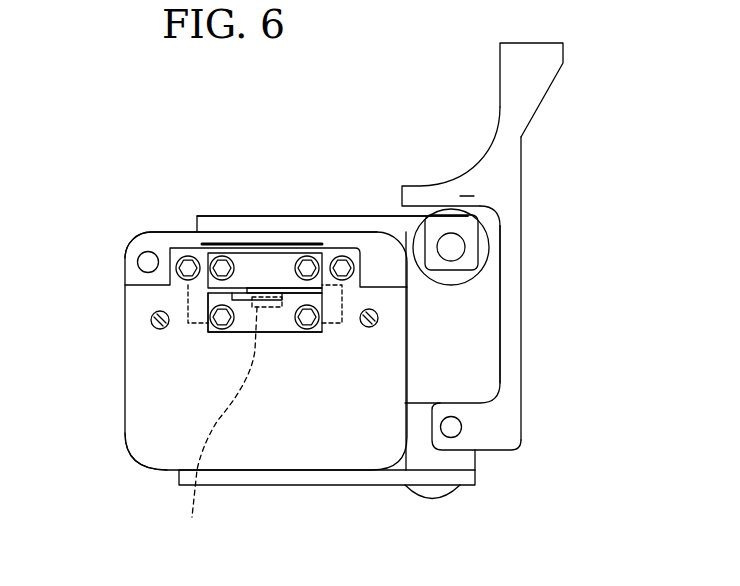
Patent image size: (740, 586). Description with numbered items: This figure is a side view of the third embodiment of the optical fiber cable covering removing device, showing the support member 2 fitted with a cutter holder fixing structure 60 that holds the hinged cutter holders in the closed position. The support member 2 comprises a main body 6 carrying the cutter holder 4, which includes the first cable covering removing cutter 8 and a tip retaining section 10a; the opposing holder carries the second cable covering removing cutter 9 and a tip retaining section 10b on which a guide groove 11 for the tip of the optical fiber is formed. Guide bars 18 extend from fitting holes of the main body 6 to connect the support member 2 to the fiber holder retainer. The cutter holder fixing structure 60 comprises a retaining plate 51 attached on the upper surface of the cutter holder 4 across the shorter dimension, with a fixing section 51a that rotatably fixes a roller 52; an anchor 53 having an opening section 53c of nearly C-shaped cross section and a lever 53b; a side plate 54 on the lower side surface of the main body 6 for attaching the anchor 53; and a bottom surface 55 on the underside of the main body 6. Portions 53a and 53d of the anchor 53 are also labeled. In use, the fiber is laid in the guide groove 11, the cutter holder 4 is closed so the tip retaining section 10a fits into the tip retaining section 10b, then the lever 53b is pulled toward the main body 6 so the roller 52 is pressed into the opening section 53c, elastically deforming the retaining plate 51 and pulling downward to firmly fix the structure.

The support member 2 is at (125, 419).
The cutter holder 4 is at (150, 232).
The main body 6 is at (146, 446).
The first cable covering removing cutter 8 is at (243, 287).
The second cable covering removing cutter 9 is at (283, 300).
The tip retaining section 10a is at (267, 297).
The tip retaining section 10b is at (188, 285).
The guide groove 11 is at (218, 430).
The guide bar 18 is at (150, 319).
The retaining plate 51 is at (397, 216).
The fixing section 51a is at (467, 195).
The roller 52 is at (480, 262).
The anchor 53 is at (522, 175).
The hook portion 53a is at (420, 195).
The lever 53b is at (538, 71).
The opening section 53c is at (490, 225).
The lever foot 53d is at (470, 437).
The side plate 54 is at (473, 465).
The bottom surface 55 is at (360, 480).
The cutter holder fixing structure 60 is at (305, 216).